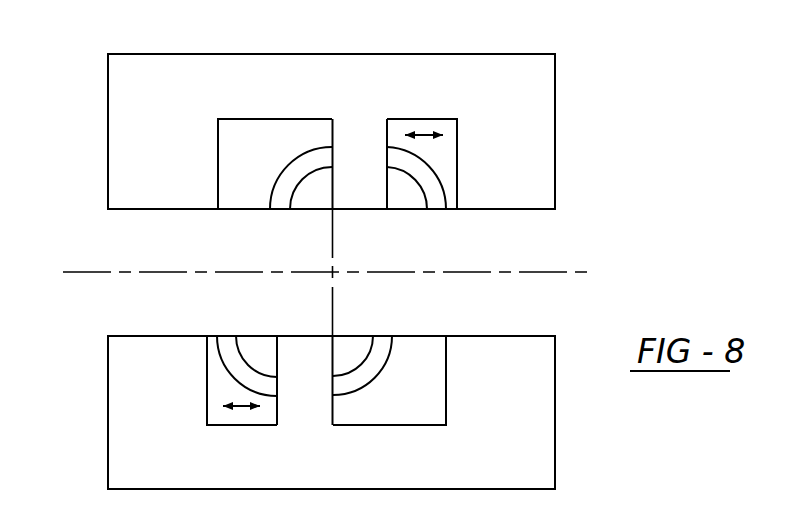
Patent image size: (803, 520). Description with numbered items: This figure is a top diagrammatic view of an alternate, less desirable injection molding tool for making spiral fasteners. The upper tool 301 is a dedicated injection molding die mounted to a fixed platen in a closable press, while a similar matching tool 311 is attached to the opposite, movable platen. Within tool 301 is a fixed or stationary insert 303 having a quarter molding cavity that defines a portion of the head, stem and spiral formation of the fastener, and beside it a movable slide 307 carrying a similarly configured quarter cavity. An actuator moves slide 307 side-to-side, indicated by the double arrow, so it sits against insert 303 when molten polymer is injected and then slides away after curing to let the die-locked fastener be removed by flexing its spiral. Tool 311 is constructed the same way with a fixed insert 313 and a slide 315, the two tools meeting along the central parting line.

The tool 301 is at (535, 85).
The fixed insert 303 is at (243, 196).
The movable slide 307 is at (453, 200).
The matching tool 311 is at (505, 431).
The fixed insert 313 is at (417, 349).
The slide 315 is at (217, 388).